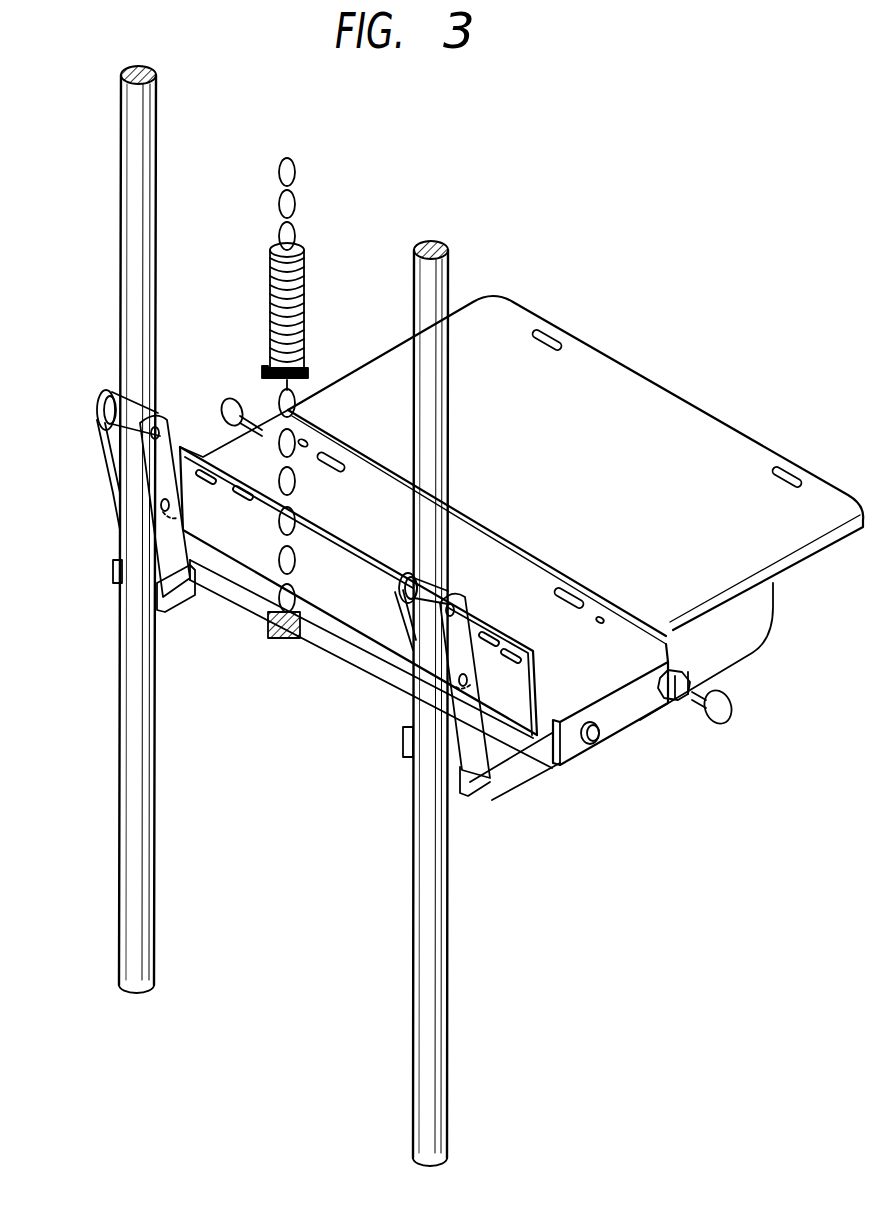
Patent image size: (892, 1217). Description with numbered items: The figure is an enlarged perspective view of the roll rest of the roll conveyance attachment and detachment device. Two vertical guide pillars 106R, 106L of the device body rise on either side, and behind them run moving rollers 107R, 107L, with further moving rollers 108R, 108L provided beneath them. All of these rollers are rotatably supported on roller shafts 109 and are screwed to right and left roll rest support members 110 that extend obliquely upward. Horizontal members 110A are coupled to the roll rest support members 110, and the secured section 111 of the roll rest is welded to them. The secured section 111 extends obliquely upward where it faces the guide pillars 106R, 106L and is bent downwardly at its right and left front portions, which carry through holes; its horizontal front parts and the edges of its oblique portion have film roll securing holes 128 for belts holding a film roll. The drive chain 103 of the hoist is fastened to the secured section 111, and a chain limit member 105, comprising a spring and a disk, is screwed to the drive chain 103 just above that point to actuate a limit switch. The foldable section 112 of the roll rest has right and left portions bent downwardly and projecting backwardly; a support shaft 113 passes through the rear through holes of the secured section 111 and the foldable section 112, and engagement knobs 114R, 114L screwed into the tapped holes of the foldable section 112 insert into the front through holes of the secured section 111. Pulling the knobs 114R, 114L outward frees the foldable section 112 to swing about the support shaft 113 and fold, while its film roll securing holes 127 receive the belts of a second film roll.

The drive chain 103 is at (297, 196).
The chain limit member 105 is at (307, 300).
The left guide pillar 106L is at (124, 256).
The right guide pillar 106R is at (447, 264).
The left moving roller 107L is at (106, 404).
The right moving roller 107R is at (404, 612).
The left lower moving roller 108L is at (114, 480).
The right lower moving roller 108R is at (430, 676).
The roller shaft 109 is at (153, 510).
The roll rest support member 110 is at (106, 447).
The horizontal member 110A is at (186, 610).
The secured section of the roll rest 111 is at (350, 604).
The foldable section of the roll rest 112 is at (662, 388).
The support shaft 113 is at (594, 744).
The left engagement knob 114L is at (230, 396).
The right engagement knob 114R is at (733, 702).
The film roll securing holes 127 is at (552, 334).
The film roll securing holes 128 is at (246, 506).